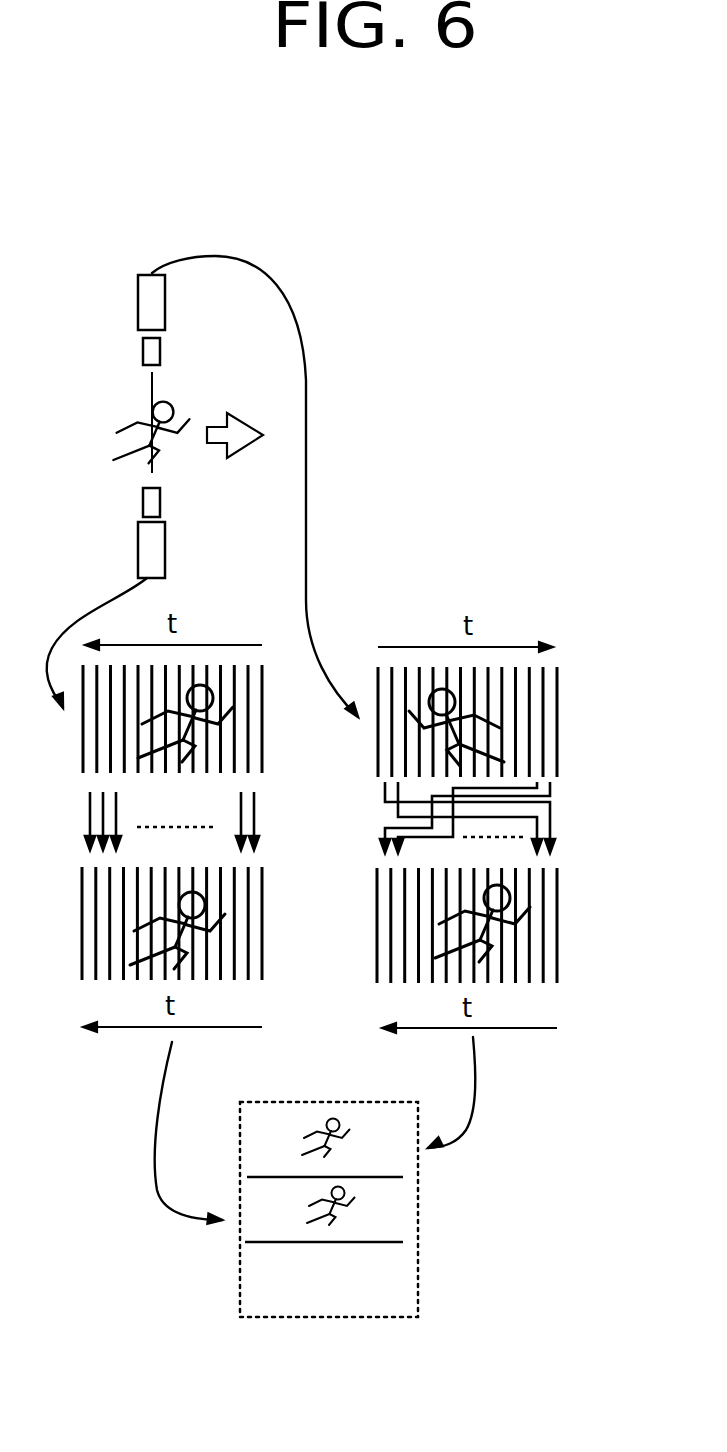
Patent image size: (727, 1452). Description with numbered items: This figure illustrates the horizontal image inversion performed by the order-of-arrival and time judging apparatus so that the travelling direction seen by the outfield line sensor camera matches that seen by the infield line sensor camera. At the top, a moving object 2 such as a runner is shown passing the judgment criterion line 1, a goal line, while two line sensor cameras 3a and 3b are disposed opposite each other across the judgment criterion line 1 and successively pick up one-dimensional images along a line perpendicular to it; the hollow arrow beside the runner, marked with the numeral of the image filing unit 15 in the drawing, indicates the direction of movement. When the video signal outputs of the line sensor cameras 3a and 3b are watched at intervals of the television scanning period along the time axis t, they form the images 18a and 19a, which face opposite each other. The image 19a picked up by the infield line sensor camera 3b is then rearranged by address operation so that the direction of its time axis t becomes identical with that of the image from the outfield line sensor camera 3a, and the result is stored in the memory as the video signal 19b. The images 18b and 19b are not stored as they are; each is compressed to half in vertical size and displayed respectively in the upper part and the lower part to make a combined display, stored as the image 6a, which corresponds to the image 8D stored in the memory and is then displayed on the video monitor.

The judgment criterion line 1 is at (153, 383).
The moving object 2 is at (123, 442).
The line sensor camera 3a is at (165, 552).
The line sensor camera 3b is at (165, 302).
The image filing unit 15 is at (247, 417).
The image 18a is at (250, 747).
The image 18b is at (248, 942).
The image 19a is at (545, 745).
The video signal 19b is at (543, 947).
The image stored in the memory 8D is at (385, 1113).
The image 6a is at (398, 1208).